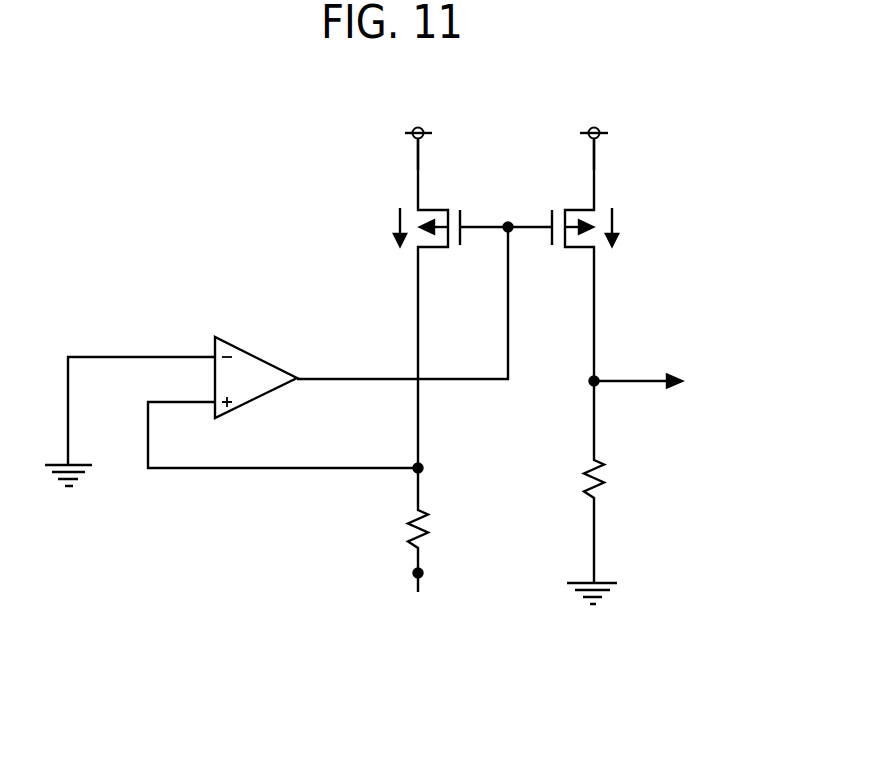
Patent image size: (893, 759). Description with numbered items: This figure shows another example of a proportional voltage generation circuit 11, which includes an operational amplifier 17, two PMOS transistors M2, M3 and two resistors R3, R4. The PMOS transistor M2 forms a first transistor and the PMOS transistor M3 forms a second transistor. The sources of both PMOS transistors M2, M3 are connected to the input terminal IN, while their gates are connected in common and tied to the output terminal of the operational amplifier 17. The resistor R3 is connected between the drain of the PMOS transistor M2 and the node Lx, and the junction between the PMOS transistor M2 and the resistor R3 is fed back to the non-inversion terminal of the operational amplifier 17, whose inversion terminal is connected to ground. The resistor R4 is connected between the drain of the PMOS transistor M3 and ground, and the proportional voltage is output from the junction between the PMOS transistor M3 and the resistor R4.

The proportional voltage generation circuit 11 is at (670, 158).
The operational amplifier 17 is at (241, 343).
The PMOS transistor M2 is at (456, 298).
The PMOS transistor M3 is at (558, 255).
The resistor R3 is at (437, 530).
The resistor R4 is at (612, 482).
The node Lx is at (422, 573).
The input terminal IN is at (417, 145).